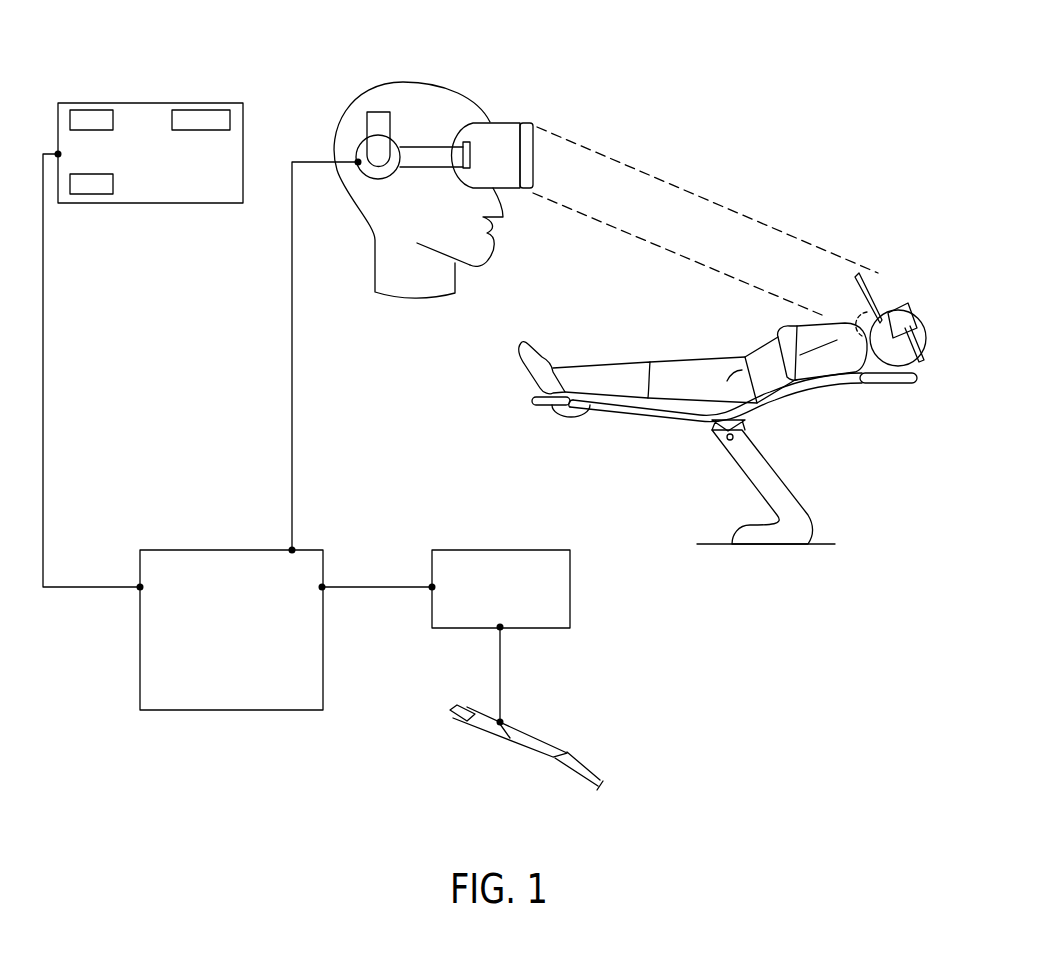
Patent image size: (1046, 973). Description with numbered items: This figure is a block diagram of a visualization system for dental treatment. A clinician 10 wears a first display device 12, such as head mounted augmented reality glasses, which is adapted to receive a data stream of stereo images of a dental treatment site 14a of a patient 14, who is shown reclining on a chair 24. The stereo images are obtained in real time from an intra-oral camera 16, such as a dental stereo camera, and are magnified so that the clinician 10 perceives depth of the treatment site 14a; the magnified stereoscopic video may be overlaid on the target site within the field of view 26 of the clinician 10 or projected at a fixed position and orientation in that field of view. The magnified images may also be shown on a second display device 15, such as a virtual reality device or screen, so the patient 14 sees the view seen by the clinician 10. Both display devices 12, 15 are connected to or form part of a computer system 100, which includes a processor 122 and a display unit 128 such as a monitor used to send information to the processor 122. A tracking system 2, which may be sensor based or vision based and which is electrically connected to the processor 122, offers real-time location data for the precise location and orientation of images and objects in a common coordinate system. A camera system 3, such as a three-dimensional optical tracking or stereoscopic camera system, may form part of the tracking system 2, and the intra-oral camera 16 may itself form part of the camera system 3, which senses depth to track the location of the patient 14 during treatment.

The computer system 100 is at (147, 103).
The processor 122 is at (83, 110).
The display unit 128 is at (212, 110).
The tracking system 2 is at (90, 195).
The camera system 3 is at (482, 548).
The clinician 10 is at (332, 123).
The first display device 12 is at (510, 122).
The field of view 26 is at (717, 205).
The patient 14 is at (673, 357).
The dental treatment site 14a is at (860, 320).
The second display device 15 is at (910, 313).
The intra-oral camera 16 is at (870, 310).
The dental chair 24 is at (810, 513).